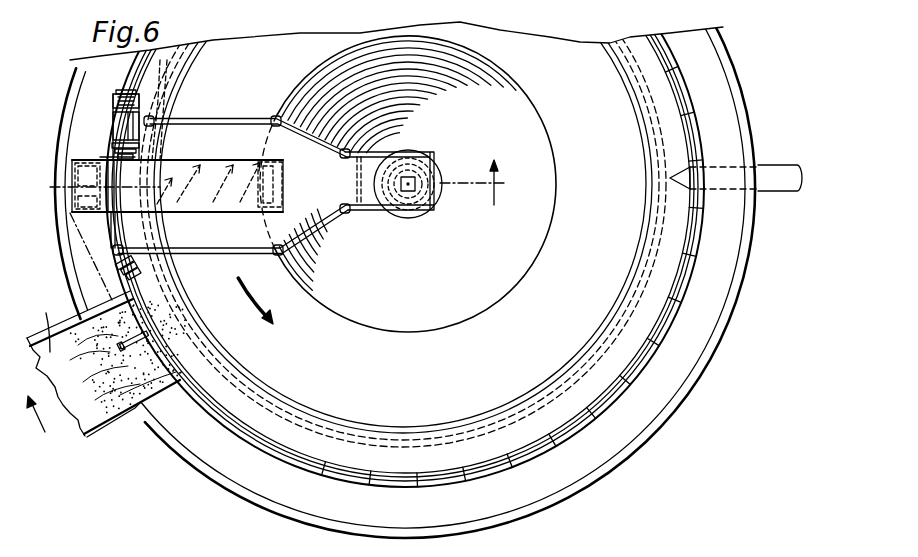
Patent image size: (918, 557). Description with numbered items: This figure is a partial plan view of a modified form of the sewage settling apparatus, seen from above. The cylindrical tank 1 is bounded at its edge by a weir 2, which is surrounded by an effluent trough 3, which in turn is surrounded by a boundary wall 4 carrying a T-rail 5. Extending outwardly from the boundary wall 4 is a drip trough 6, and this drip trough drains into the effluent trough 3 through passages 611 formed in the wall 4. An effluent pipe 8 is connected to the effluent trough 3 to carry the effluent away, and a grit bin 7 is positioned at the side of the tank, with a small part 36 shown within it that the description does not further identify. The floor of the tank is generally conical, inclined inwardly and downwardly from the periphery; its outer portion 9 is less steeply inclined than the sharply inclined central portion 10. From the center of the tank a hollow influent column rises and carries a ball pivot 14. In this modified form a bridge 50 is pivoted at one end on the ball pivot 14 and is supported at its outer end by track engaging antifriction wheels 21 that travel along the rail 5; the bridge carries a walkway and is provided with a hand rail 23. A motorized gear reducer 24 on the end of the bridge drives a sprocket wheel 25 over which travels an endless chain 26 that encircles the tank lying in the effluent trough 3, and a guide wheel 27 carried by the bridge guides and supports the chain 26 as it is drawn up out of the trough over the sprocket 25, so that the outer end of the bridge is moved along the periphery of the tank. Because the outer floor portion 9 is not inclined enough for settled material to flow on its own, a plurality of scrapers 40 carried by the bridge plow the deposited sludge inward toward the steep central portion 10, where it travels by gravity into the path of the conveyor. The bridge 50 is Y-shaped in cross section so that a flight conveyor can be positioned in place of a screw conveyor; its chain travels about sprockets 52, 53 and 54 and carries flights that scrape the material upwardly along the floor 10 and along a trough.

The outer tank wall 1 is at (679, 408).
The inner ring 2 is at (650, 232).
The ring conduit hidden line 3 is at (667, 272).
The outer track rail 4 is at (685, 288).
The inner track rail 5 is at (692, 254).
The tank wall inner face 6 is at (632, 418).
The section line 7- 7 is at (266, 314).
The inlet pipe 8 is at (771, 165).
The annular trough 9 is at (242, 58).
The spiral ramp 10 is at (333, 70).
The central hub and bearing 14 is at (410, 204).
The valve fitting 21 is at (113, 104).
The lower pipe arm 23 is at (228, 247).
The valve body 24 is at (113, 126).
The valve actuator 25 is at (113, 148).
The ring conduit 26 is at (164, 77).
The branch connection 27 is at (150, 157).
The discharge gate 36 is at (124, 350).
The carriage frame 40 is at (233, 161).
The upper pipe arm 50 is at (250, 119).
The drive coupling 52 is at (348, 186).
The drive shaft 53 is at (282, 184).
The motor housing 54 is at (75, 186).
The rail segments 611 is at (690, 88).